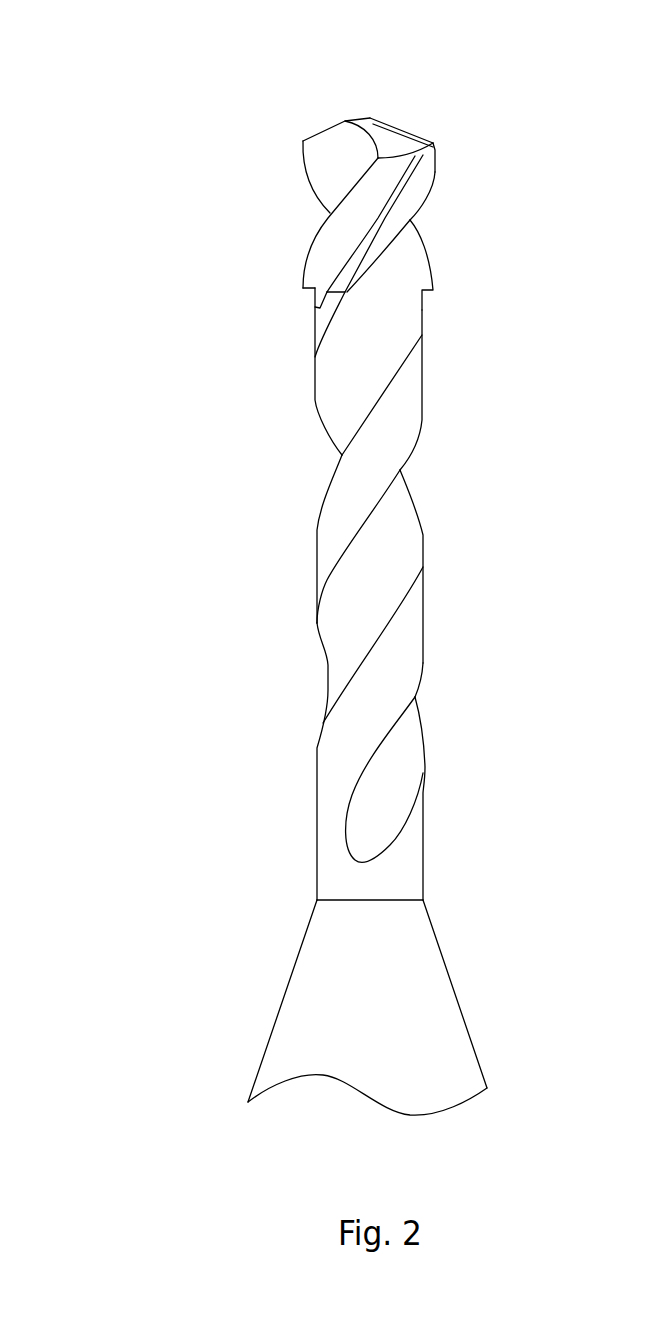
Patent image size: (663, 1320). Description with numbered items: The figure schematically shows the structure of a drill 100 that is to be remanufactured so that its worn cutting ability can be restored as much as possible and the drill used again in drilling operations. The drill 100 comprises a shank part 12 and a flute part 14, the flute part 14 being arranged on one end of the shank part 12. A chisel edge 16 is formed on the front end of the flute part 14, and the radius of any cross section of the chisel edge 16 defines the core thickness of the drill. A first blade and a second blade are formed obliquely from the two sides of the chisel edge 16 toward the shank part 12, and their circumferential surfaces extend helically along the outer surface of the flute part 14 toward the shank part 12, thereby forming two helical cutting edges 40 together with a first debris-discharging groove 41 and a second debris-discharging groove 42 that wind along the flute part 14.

The drill 100 is at (114, 88).
The shank part 12 is at (308, 1035).
The flute part 14 is at (337, 857).
The chisel edge 16 is at (358, 118).
The helical cutting edges 40 is at (424, 178).
The first debris-discharging groove 41 is at (423, 259).
The second debris-discharging groove 42 is at (410, 397).